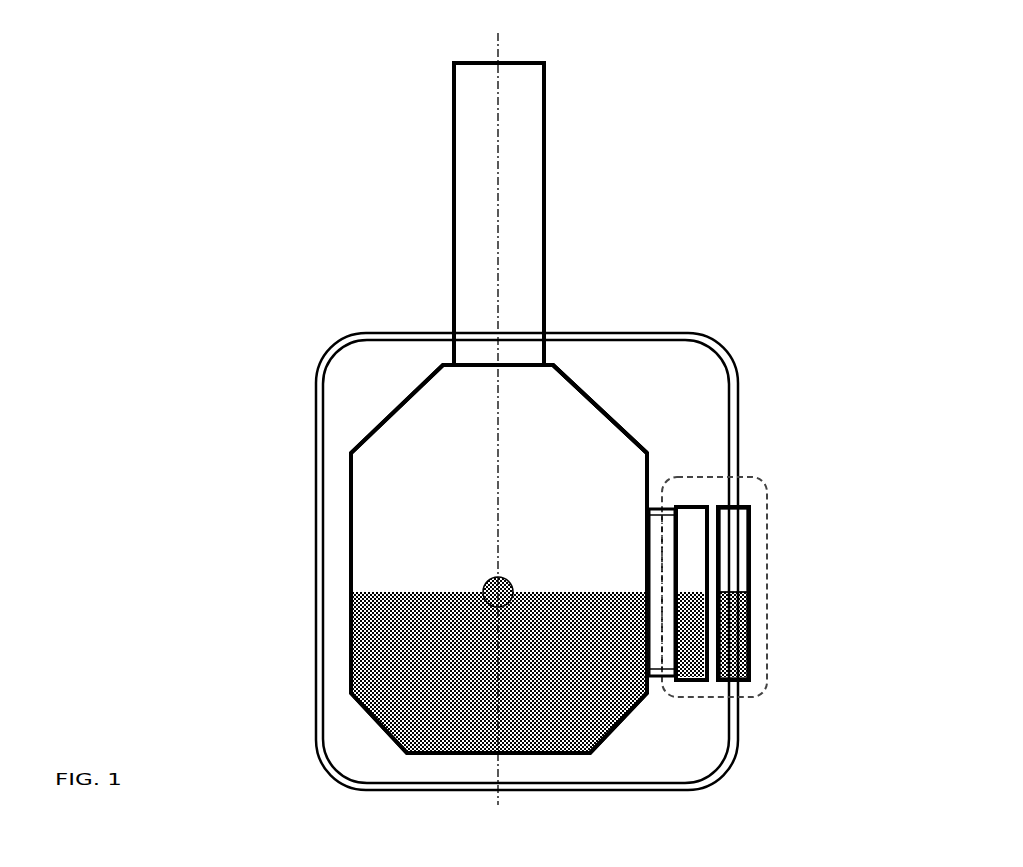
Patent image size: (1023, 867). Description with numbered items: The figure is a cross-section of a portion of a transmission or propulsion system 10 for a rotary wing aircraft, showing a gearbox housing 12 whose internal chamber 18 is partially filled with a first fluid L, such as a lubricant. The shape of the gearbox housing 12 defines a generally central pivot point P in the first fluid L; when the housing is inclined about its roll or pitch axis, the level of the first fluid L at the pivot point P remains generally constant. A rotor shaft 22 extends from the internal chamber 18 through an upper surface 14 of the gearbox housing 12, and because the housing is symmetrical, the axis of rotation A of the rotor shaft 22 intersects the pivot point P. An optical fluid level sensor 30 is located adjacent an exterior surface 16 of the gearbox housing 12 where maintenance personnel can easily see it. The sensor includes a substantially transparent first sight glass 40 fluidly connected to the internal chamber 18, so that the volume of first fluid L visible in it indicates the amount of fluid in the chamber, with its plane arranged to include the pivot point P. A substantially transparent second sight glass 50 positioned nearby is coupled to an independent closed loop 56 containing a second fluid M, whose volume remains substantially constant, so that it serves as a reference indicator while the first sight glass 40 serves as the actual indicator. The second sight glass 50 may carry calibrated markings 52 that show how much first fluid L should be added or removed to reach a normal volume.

The transmission or propulsion system 10 is at (356, 262).
The gearbox housing 12 is at (350, 482).
The upper surface 14 is at (548, 367).
The exterior surface 16 is at (650, 470).
The internal chamber 18 is at (435, 484).
The rotor shaft 22 is at (545, 242).
The optical fluid level sensor 30 is at (877, 480).
The first sight glass 40 is at (680, 507).
The second sight glass 50 is at (750, 547).
The calibrated markings 52 is at (732, 580).
The closed loop 56 is at (735, 743).
The axis of rotation A is at (496, 413).
The first fluid L is at (393, 668).
The pivot point P is at (498, 585).
The second fluid M is at (733, 637).